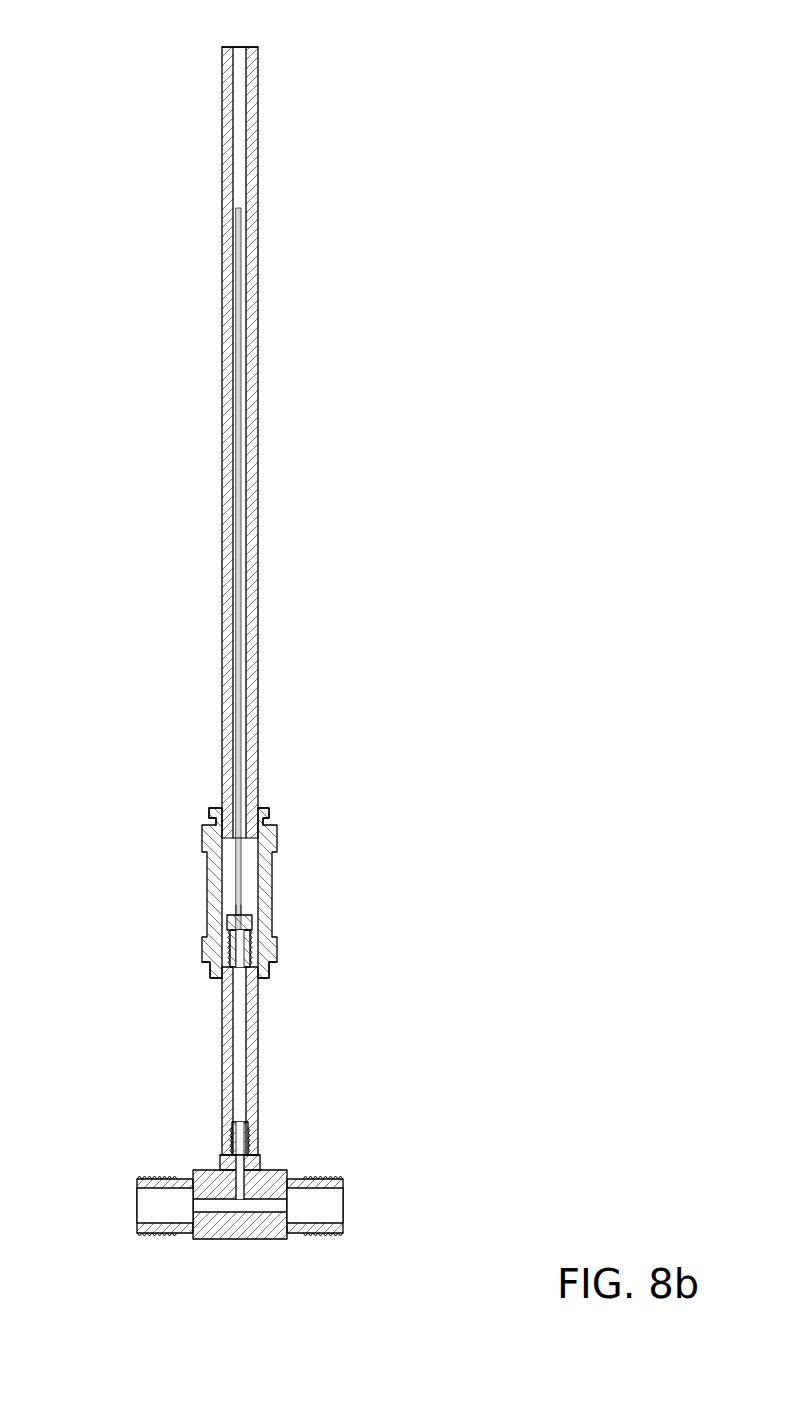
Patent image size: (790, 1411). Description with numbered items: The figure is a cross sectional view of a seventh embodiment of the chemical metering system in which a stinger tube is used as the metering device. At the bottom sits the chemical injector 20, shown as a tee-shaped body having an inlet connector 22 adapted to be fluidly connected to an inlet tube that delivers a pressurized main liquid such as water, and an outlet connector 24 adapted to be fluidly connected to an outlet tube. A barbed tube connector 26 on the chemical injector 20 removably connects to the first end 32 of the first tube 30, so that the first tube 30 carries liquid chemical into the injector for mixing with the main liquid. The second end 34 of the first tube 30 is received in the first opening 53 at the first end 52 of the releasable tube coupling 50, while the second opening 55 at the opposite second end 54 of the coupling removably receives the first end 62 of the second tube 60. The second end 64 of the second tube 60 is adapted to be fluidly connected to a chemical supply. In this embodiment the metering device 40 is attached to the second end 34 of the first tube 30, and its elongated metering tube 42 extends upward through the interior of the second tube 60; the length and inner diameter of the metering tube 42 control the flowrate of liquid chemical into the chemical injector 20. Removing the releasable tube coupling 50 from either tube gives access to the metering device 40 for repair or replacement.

The chemical injector 20 is at (236, 1243).
The inlet connector 22 is at (137, 1200).
The outlet connector 24 is at (343, 1205).
The barbed tube connector 26 is at (235, 1132).
The first tube 30 is at (222, 1068).
The first end 32 is at (222, 1148).
The second end 34 is at (228, 933).
The metering device 40 is at (233, 913).
The metering tube 42 is at (241, 733).
The releasable tube coupling 50 is at (276, 903).
The first end 52 is at (218, 980).
The first opening 53 is at (257, 980).
The second end 54 is at (258, 807).
The second opening 55 is at (222, 807).
The second tube 60 is at (258, 470).
The first end 62 is at (253, 833).
The second end 64 is at (240, 47).